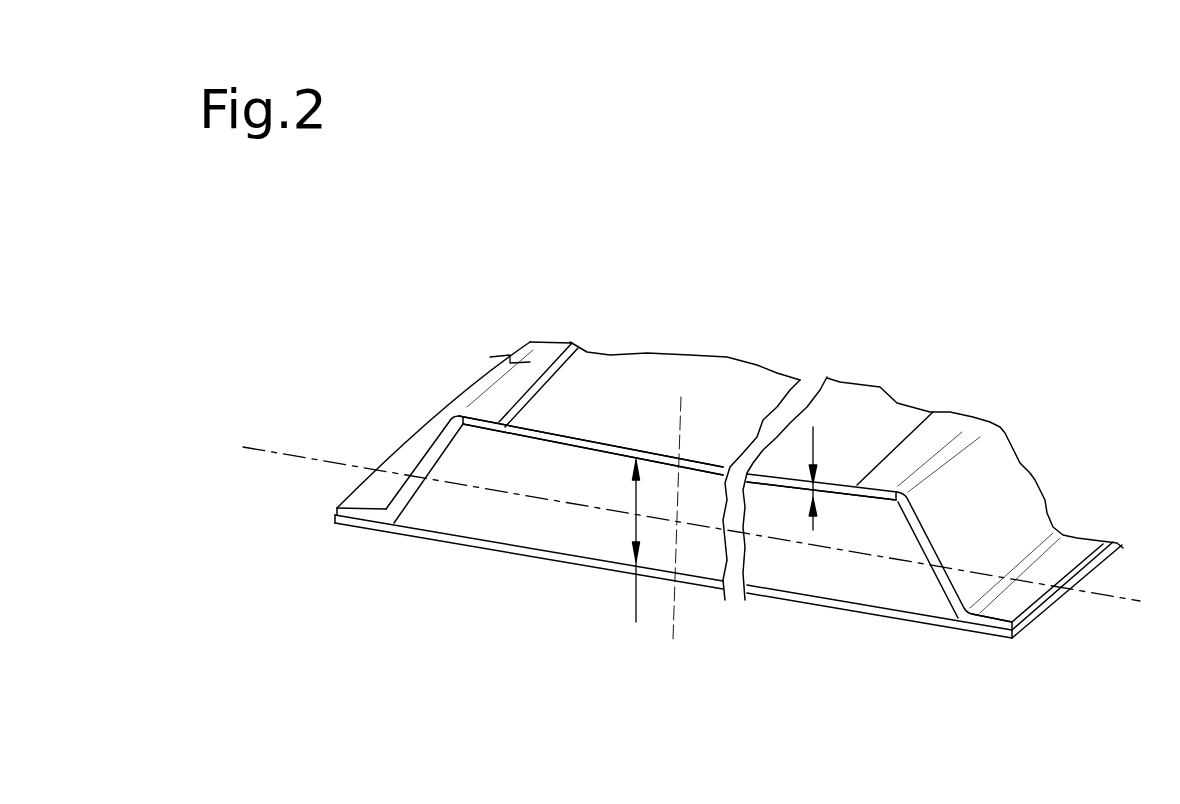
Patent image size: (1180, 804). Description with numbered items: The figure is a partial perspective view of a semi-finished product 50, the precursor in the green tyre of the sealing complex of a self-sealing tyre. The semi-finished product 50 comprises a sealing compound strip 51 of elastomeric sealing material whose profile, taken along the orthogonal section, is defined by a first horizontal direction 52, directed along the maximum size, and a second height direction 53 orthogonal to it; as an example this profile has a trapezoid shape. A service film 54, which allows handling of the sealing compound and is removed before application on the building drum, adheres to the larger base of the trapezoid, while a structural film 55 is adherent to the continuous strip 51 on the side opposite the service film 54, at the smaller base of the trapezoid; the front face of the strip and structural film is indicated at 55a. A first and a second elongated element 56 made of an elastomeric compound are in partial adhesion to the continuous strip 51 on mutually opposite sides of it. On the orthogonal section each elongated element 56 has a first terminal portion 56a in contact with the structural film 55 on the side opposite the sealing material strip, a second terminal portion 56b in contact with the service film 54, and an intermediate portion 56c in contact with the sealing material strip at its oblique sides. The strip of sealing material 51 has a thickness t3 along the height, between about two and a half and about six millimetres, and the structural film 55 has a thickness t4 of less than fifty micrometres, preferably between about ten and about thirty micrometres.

The semi-finished product 50 is at (798, 318).
The sealing compound strip 51 is at (565, 472).
The horizontal direction 52 is at (268, 447).
The height direction 53 is at (683, 417).
The service film 54 is at (545, 556).
The structural film 55 is at (613, 398).
The front face of top portion 55a is at (478, 429).
The elongated element 56 is at (440, 427).
The first terminal portion 56a is at (493, 407).
The second terminal portion 56b is at (362, 500).
The intermediate portion 56c is at (420, 463).
The thickness of the strip of sealing material t3 is at (632, 602).
The thickness of the structural film t4 is at (817, 443).